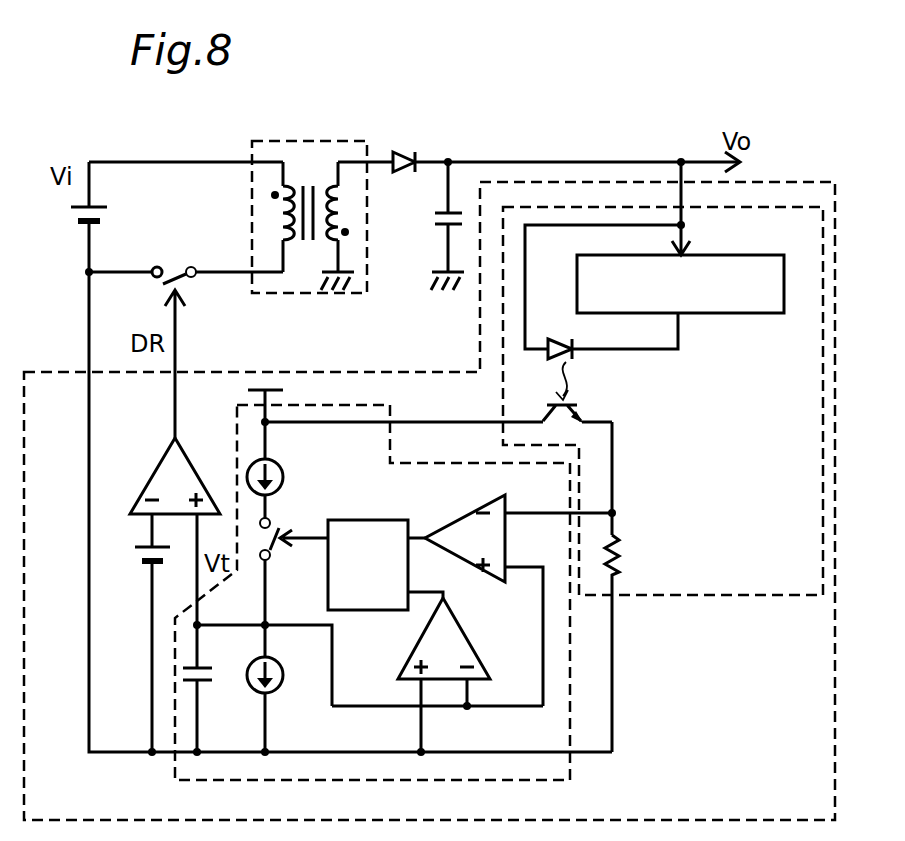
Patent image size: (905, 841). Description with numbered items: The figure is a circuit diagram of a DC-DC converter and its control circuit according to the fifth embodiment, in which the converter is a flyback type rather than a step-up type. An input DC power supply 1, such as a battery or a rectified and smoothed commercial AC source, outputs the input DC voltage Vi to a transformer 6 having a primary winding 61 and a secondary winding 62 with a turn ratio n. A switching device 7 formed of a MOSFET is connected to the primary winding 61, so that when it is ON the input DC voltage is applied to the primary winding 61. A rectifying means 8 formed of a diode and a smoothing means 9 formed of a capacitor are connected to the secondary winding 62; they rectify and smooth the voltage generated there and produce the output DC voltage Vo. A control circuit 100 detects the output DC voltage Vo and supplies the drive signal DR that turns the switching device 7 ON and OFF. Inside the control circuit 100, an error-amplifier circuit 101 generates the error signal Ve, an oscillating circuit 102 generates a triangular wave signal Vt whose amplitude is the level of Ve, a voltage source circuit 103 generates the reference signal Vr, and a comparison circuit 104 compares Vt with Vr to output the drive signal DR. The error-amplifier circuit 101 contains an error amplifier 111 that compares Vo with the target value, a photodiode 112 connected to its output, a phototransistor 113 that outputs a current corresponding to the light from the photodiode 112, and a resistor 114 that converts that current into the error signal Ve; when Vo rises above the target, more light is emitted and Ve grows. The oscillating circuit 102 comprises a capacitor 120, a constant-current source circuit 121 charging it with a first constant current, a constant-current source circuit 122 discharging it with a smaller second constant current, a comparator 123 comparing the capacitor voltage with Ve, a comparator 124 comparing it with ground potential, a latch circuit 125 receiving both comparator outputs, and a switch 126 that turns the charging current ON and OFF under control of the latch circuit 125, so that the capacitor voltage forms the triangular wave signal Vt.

The input DC power supply 1 is at (82, 232).
The transformer 6 is at (310, 203).
The switching device 7 is at (160, 264).
The rectifying means 8 is at (418, 160).
The smoothing means 9 is at (435, 218).
The primary winding 61 is at (258, 222).
The secondary winding 62 is at (348, 215).
The control circuit 100 is at (478, 318).
The error-amplifier circuit 101 is at (630, 597).
The oscillating circuit 102 is at (572, 736).
The voltage source circuit 103 is at (146, 568).
The comparison circuit 104 is at (158, 468).
The error amplifier 111 is at (745, 315).
The photodiode 112 is at (563, 342).
The phototransistor 113 is at (586, 410).
The resistor 114 is at (616, 535).
The capacitor 120 is at (210, 686).
The constant-current source circuit 121 is at (280, 464).
The constant-current source circuit 122 is at (283, 692).
The comparator 123 is at (460, 515).
The comparator 124 is at (466, 636).
The latch circuit 125 is at (386, 612).
The switch 126 is at (272, 560).